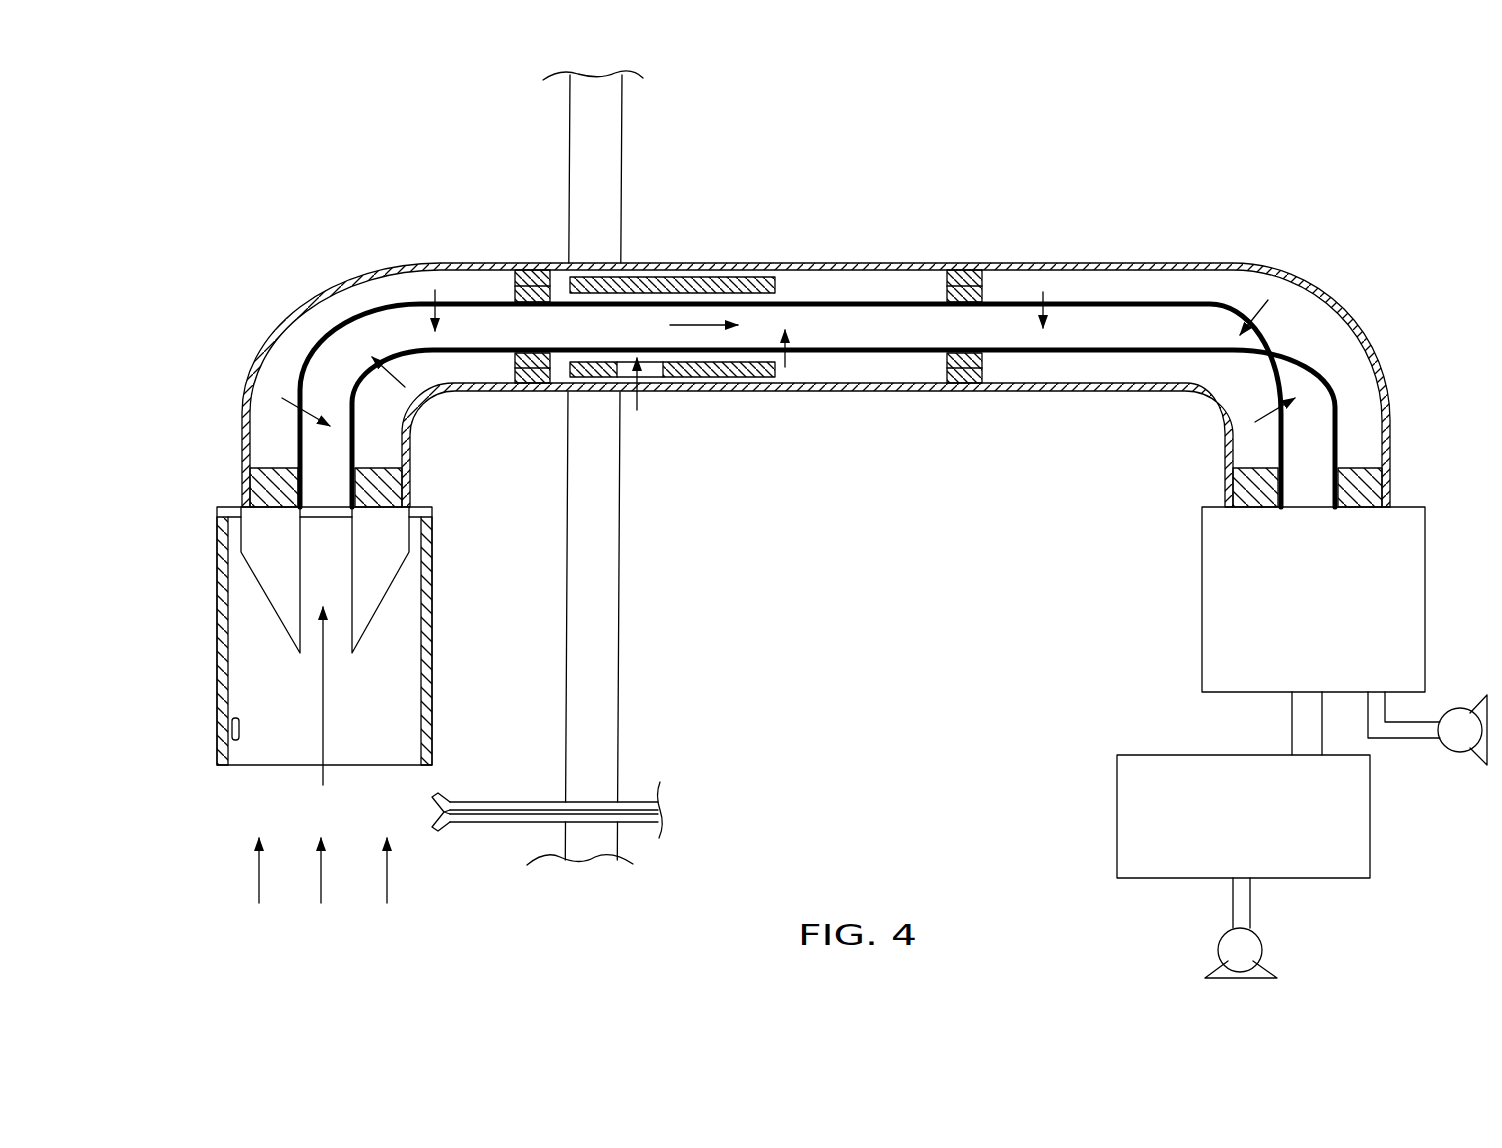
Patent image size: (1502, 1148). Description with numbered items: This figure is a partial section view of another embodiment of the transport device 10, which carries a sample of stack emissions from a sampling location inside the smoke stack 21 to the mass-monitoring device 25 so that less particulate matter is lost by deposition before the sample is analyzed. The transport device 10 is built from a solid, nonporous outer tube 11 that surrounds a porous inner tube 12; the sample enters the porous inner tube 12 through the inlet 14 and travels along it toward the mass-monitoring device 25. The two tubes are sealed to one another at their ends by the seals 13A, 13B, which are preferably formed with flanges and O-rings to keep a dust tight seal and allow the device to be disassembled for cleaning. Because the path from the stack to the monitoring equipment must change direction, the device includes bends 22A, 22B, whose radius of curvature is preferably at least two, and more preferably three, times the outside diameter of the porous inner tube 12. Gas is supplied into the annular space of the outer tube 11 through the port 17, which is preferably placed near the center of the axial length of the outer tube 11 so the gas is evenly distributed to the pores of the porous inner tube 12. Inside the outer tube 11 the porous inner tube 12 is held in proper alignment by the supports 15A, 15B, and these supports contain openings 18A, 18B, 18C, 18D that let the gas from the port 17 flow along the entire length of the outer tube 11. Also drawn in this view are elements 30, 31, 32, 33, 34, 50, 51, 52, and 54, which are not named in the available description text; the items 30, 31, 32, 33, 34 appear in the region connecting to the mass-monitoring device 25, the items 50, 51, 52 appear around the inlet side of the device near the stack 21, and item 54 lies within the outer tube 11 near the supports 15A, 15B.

The transport device 10 is at (922, 224).
The outer tube 11 is at (790, 268).
The porous inner tube 12 is at (850, 300).
The seal 13A is at (262, 482).
The seal 13B is at (1378, 480).
The inlet 14 is at (325, 512).
The support 15A is at (530, 280).
The support 15B is at (955, 272).
The port 17 is at (648, 392).
The opening 18A is at (548, 268).
The opening 18B is at (530, 390).
The opening 18C is at (985, 275).
The opening 18D is at (967, 392).
The smoke stack 21 is at (610, 137).
The bend 22A is at (316, 260).
The bend 22B is at (1356, 303).
The mass-monitoring device 25 is at (1127, 812).
The pump 30 is at (1222, 952).
The pump 31 is at (1462, 718).
The pipe 32 is at (1403, 730).
The pipe 33 is at (1300, 722).
The reservoir 34 is at (1225, 535).
The chamber 50 is at (407, 707).
The tube 51 is at (498, 803).
The port 52 is at (232, 728).
The upper plate 54 is at (726, 277).